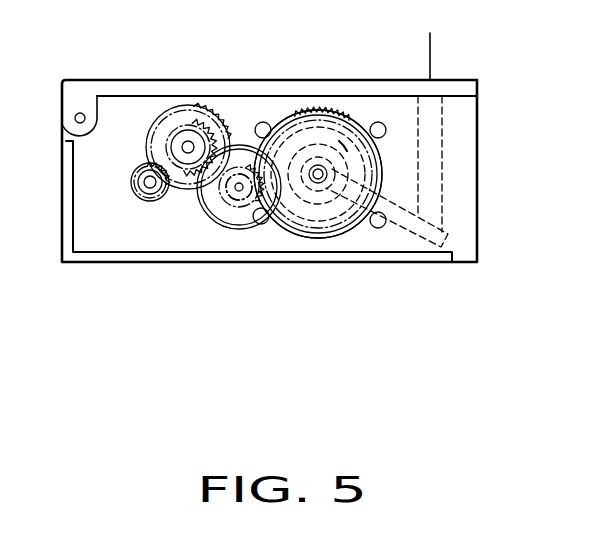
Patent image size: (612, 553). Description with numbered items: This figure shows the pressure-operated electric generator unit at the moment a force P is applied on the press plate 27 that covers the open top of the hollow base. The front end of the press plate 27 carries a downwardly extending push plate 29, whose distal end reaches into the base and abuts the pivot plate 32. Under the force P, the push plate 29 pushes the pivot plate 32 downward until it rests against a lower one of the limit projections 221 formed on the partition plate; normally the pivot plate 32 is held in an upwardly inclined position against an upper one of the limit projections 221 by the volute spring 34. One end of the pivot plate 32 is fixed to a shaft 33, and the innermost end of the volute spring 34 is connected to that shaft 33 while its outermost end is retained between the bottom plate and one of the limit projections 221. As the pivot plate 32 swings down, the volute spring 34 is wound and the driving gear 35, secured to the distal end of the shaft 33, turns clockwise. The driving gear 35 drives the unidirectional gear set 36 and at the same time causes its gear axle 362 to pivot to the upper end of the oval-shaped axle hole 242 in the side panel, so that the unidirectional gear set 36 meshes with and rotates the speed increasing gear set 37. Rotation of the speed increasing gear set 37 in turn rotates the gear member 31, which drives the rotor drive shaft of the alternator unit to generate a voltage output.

The press plate 27 is at (451, 86).
The force P is at (425, 40).
The push plate 29 is at (433, 153).
The gear member 31 is at (135, 170).
The pivot plate 32 is at (433, 247).
The shaft 33 is at (314, 170).
The volute spring 34 is at (345, 214).
The driving gear 35 is at (309, 240).
The unidirectional gear set 36 is at (232, 203).
The speed increasing gear set 37 is at (175, 105).
The limit projections 221 is at (376, 124).
The axle hole 242 is at (238, 192).
The gear axle 362 is at (236, 190).